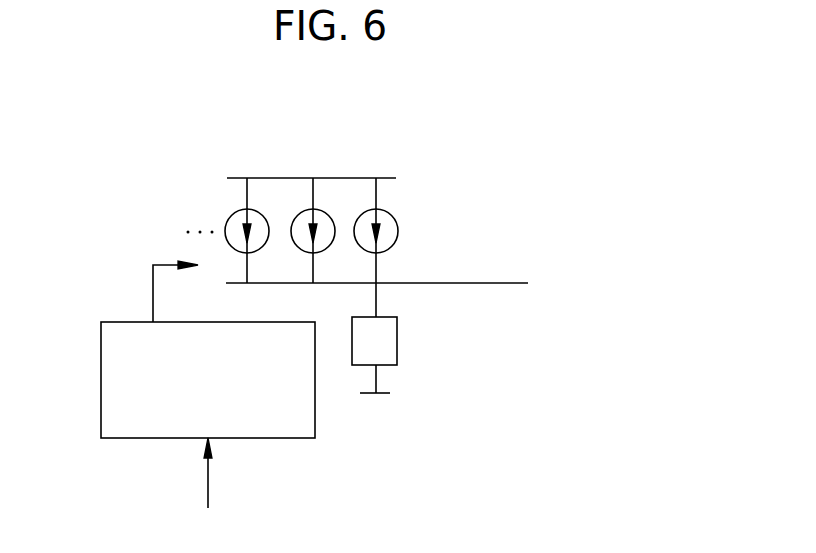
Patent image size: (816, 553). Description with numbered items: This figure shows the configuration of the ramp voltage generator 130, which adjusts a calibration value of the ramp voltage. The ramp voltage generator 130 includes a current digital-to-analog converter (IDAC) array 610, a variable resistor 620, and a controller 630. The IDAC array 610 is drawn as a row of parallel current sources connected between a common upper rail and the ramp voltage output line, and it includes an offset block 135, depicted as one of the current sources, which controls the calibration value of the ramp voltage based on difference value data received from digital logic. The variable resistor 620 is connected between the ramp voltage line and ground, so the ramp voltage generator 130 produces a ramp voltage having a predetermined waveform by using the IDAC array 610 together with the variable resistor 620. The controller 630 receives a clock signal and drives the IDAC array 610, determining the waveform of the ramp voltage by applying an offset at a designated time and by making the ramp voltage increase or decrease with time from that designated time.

The ramp voltage generator 130 is at (511, 143).
The current digital-to-analog converter (IDAC) array 610 is at (236, 175).
The offset block 135 is at (397, 223).
The variable resistor 620 is at (397, 329).
The controller 630 is at (101, 361).